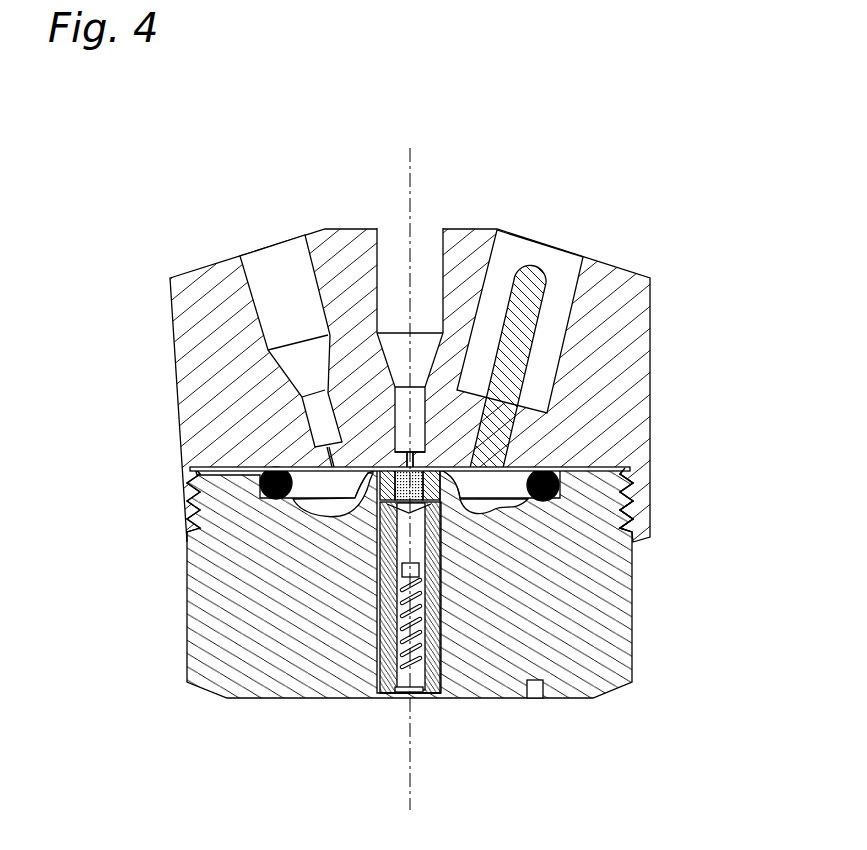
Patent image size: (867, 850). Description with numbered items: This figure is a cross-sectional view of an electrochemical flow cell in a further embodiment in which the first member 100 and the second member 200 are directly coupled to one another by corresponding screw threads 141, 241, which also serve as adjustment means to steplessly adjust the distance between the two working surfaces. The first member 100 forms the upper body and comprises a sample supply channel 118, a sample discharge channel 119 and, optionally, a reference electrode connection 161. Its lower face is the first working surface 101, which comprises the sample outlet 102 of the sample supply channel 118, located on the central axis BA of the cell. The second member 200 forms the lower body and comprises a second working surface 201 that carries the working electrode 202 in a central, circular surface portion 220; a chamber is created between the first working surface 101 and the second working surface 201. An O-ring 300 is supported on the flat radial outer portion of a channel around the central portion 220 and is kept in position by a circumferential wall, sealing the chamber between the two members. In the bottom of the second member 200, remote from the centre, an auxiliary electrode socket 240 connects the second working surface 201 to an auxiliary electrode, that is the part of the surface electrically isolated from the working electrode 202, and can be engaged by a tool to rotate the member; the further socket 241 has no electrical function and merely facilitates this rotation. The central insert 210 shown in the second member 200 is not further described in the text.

The first member 100 is at (642, 258).
The first working surface 101 is at (525, 468).
The sample outlet 102 is at (413, 467).
The sample supply channel 118 is at (402, 253).
The sample discharge channel 119 is at (266, 267).
The screw thread 141 is at (643, 515).
The reference electrode connection 161 is at (533, 255).
The second member 200 is at (255, 707).
The second working surface 201 is at (508, 510).
The working electrode 202 is at (447, 498).
The valve insert 210 is at (410, 581).
The central, circular surface portion 220 is at (380, 480).
The auxiliary electrode socket 240 is at (533, 700).
The further socket 241 is at (623, 517).
The O-ring 300 is at (190, 468).
The axis BA is at (410, 150).